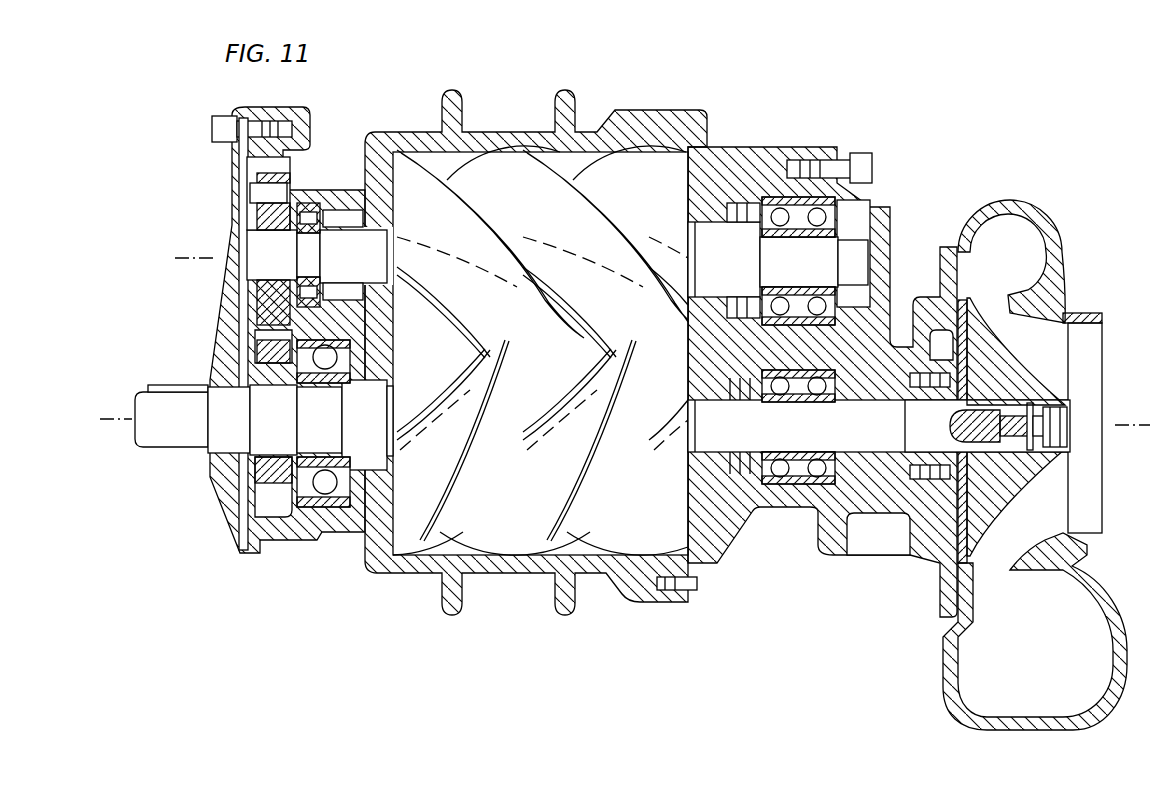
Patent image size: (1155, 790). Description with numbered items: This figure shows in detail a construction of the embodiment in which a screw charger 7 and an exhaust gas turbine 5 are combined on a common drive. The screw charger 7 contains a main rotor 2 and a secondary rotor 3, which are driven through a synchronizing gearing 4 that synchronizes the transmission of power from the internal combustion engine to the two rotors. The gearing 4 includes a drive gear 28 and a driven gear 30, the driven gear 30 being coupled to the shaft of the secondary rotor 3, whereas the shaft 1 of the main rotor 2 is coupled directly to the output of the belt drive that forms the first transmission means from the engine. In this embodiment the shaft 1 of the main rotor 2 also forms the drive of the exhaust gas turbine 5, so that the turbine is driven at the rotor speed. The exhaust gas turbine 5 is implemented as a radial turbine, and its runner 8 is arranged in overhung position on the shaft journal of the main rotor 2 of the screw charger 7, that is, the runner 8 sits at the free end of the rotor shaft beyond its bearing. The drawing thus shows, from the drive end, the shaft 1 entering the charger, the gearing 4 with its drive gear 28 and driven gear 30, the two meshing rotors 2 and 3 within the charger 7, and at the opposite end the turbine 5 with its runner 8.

The shaft 1 is at (174, 432).
The main rotor 2 is at (520, 548).
The secondary rotor 3 is at (525, 160).
The synchronizing gearing 4 is at (262, 338).
The exhaust gas turbine 5 is at (944, 215).
The screw charger 7 is at (481, 105).
The runner 8 is at (1033, 328).
The drive gear 28 is at (252, 515).
The driven gear 30 is at (292, 168).